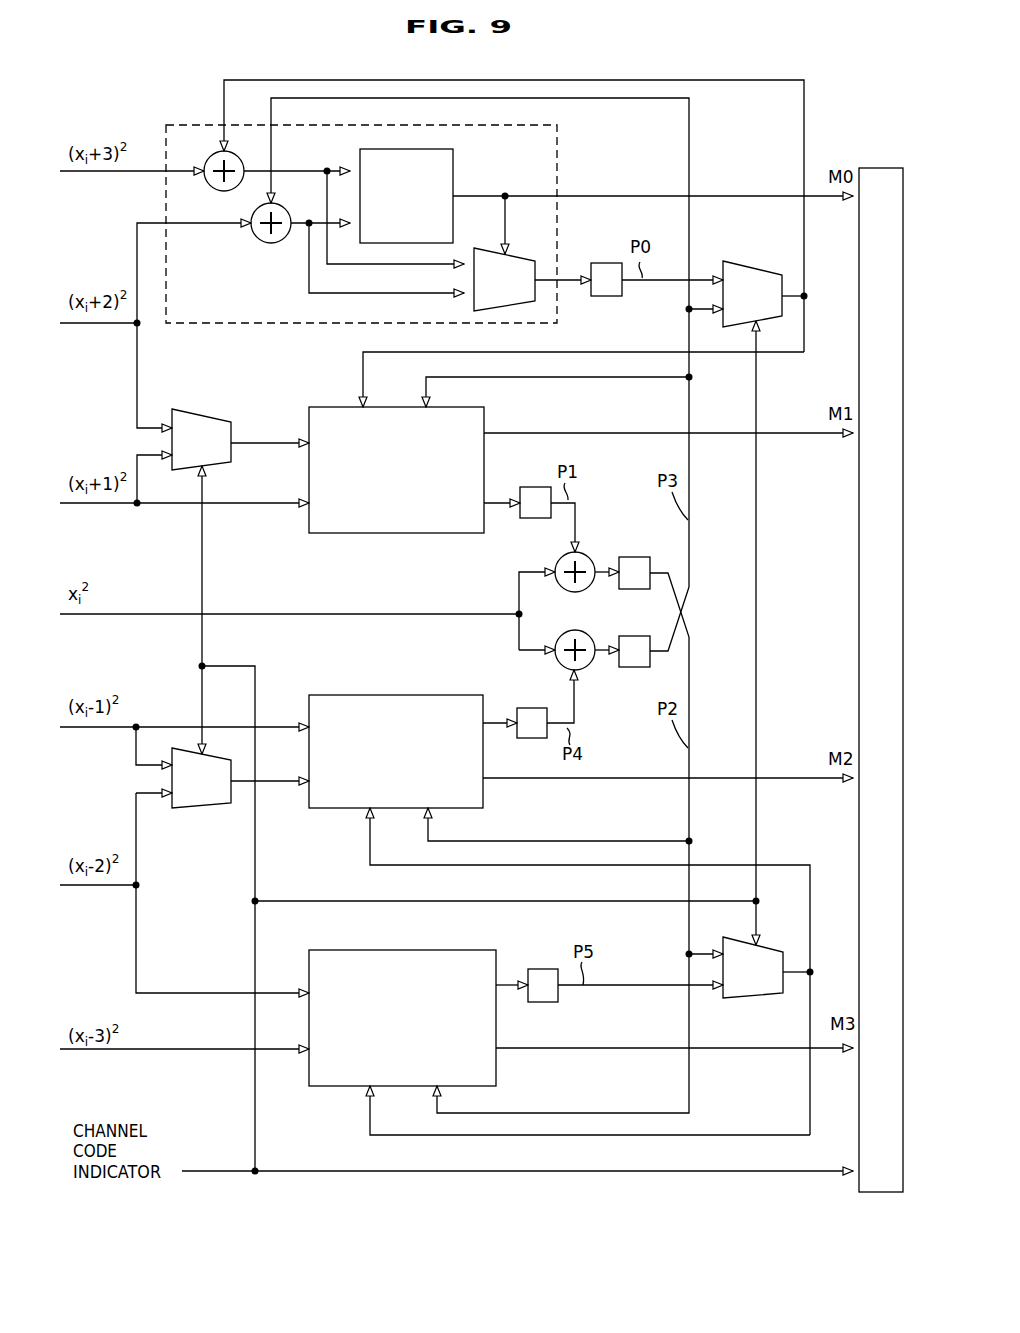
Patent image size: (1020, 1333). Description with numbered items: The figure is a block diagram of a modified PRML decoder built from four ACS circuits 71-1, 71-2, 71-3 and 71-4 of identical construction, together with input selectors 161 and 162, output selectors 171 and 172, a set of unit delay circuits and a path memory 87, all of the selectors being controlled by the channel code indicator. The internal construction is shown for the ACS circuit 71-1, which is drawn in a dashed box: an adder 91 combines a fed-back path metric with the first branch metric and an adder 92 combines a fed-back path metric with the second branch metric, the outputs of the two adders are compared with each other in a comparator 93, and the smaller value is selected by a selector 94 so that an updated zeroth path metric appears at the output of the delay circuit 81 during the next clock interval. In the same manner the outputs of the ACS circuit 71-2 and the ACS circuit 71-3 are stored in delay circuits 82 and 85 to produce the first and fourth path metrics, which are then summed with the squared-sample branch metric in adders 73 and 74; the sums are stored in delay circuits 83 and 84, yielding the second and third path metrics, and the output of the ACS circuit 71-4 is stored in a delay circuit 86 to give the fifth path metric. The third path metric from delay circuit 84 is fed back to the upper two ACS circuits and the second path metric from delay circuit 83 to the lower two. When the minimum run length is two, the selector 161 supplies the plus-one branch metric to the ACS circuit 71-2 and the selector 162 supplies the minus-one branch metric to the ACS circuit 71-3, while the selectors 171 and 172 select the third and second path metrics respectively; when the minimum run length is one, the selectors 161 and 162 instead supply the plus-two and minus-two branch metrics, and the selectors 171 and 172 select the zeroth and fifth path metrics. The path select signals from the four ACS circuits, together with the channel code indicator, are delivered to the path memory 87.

The ACS circuit 71-1 is at (283, 325).
The adder 91 is at (215, 191).
The adder 92 is at (277, 246).
The comparator 93 is at (456, 178).
The selector 94 is at (528, 257).
The unit delay circuit 81 is at (594, 263).
The output selector 171 is at (755, 269).
The path memory 87 is at (876, 167).
The input selector 161 is at (201, 410).
The ACS circuit 71-2 is at (404, 535).
The unit delay circuit 82 is at (541, 520).
The adder 73 is at (588, 558).
The unit delay circuit 83 is at (632, 557).
The unit delay circuit 84 is at (634, 668).
The adder 74 is at (588, 668).
The unit delay circuit 85 is at (532, 706).
The ACS circuit 71-3 is at (372, 695).
The input selector 162 is at (198, 810).
The ACS circuit 71-4 is at (372, 950).
The unit delay circuit 86 is at (543, 968).
The output selector 172 is at (758, 1000).